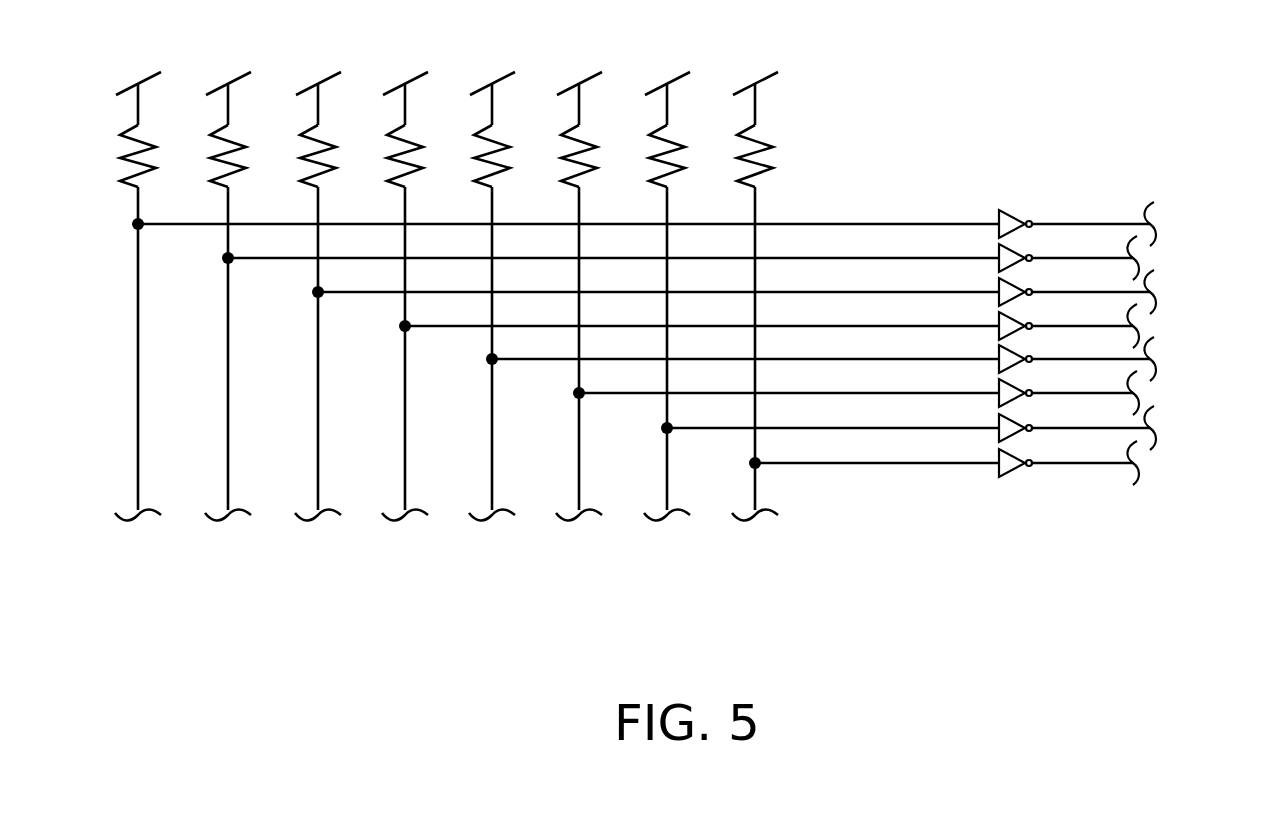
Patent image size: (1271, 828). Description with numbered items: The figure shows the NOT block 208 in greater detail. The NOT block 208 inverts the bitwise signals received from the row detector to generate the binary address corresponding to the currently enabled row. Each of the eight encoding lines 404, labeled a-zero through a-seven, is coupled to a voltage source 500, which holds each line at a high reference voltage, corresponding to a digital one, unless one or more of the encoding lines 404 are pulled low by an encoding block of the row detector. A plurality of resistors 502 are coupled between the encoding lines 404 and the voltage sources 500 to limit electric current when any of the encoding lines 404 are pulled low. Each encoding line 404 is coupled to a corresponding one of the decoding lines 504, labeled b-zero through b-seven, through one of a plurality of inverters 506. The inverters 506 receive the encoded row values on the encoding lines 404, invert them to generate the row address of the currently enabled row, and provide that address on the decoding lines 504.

The NOT block 208 is at (212, 643).
The encoding lines 404 is at (112, 566).
The voltage source 500 is at (772, 73).
The resistors 502 is at (772, 147).
The decoding lines 504 is at (1206, 203).
The inverters 506 is at (998, 477).